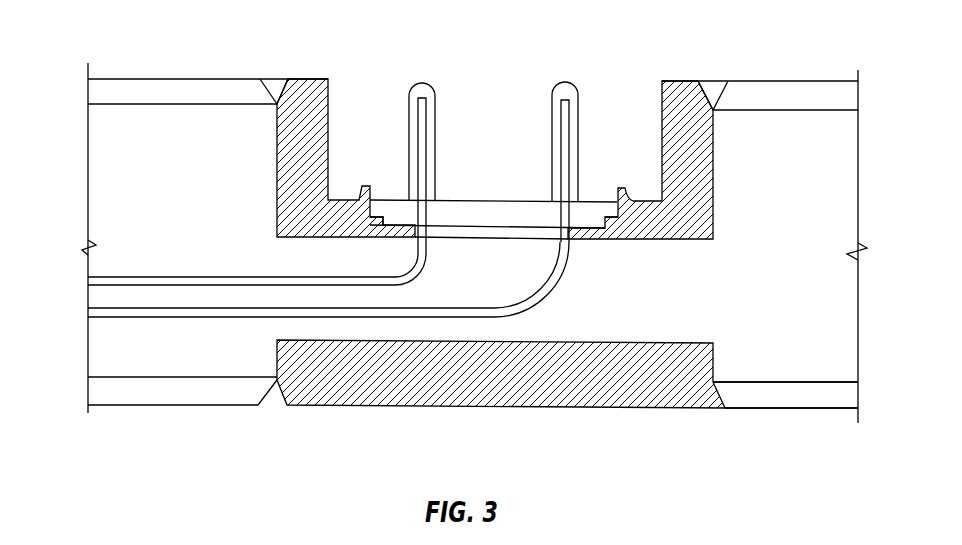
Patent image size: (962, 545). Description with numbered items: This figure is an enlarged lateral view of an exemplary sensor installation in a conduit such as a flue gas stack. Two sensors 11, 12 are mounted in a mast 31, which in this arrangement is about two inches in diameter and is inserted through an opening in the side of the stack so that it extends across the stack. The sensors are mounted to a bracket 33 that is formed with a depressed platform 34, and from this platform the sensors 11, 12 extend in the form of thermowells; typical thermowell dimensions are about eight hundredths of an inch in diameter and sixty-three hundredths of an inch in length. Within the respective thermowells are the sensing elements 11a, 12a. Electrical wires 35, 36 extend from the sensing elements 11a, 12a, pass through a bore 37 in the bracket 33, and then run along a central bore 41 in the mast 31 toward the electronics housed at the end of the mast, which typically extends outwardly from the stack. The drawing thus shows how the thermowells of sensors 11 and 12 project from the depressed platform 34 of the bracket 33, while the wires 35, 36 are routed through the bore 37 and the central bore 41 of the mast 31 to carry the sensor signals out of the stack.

The mast 31 is at (757, 82).
The bracket 33 is at (350, 406).
The depressed platform 34 is at (395, 200).
The electrical wire 35 is at (558, 280).
The electrical wire 36 is at (423, 250).
The bore 37 is at (697, 283).
The central bore 41 is at (758, 360).
The sensor 11 is at (578, 158).
The sensing element 11a is at (569, 113).
The sensor 12 is at (437, 120).
The sensing element 12a is at (408, 113).